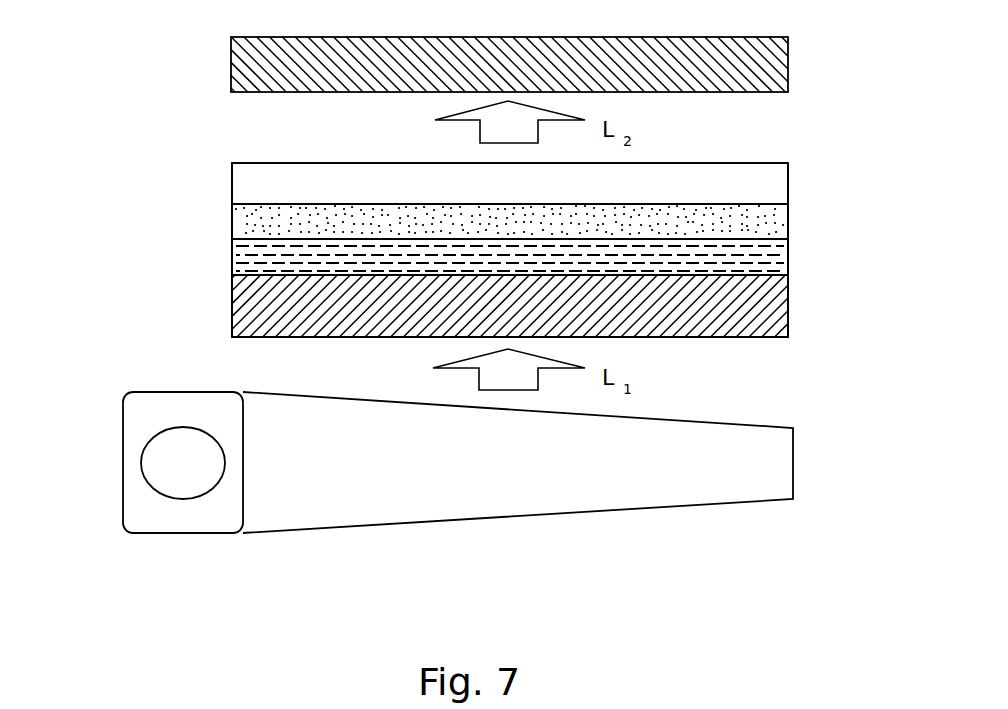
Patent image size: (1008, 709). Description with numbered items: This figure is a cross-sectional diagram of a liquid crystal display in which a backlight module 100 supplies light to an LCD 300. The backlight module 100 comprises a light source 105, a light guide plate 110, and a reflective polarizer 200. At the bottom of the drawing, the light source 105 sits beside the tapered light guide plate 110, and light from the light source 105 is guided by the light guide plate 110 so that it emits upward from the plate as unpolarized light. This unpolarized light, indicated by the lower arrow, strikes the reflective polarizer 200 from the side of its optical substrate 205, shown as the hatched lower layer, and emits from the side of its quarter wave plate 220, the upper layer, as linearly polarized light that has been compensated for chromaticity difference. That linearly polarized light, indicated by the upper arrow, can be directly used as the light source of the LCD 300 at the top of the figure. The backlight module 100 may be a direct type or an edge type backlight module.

The backlight module 100 is at (469, 496).
The light source 105 is at (183, 499).
The light guide plate 110 is at (793, 463).
The reflective polarizer 200 is at (495, 245).
The optical substrate 205 is at (788, 303).
The quarter wave plate 220 is at (788, 184).
The LCD 300 is at (203, 63).